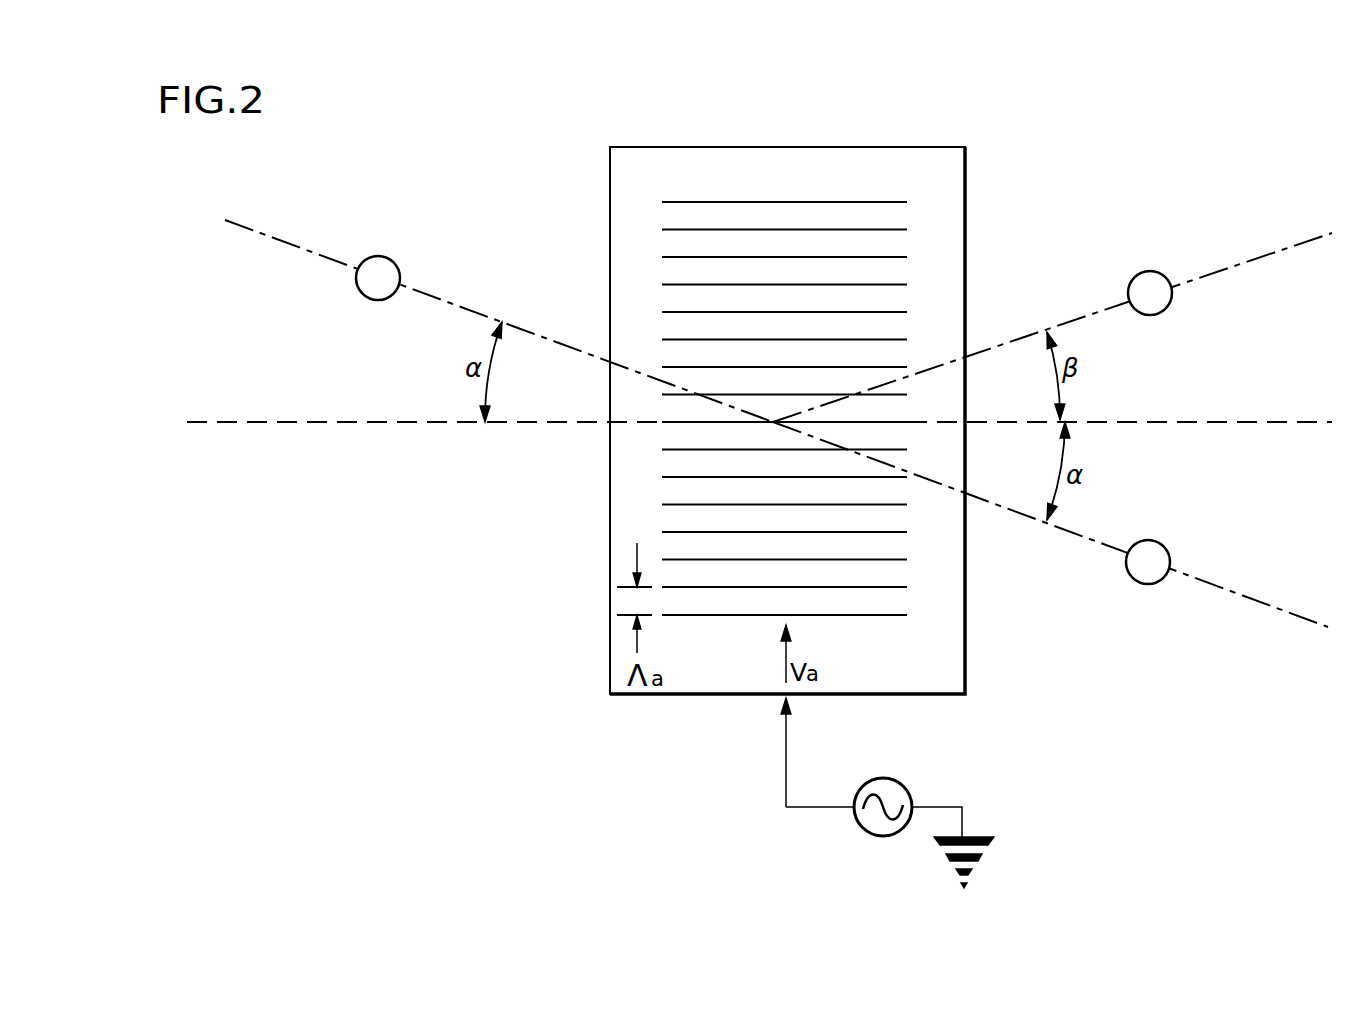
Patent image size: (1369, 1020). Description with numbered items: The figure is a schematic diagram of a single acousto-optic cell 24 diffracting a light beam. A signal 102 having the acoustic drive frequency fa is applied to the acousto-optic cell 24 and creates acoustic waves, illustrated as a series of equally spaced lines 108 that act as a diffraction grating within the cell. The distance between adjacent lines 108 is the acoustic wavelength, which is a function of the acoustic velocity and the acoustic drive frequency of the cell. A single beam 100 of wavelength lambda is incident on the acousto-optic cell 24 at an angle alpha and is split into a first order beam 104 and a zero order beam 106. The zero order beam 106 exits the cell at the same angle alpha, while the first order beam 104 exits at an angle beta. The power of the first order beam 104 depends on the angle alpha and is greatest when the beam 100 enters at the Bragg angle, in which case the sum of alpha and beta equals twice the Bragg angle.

The acousto-optic cell 24 is at (803, 143).
The beam 100 is at (268, 237).
The signal 102 is at (786, 770).
The first order beam 104 is at (1275, 253).
The zero order beam 106 is at (1255, 600).
The equally spaced lines 108 is at (818, 202).